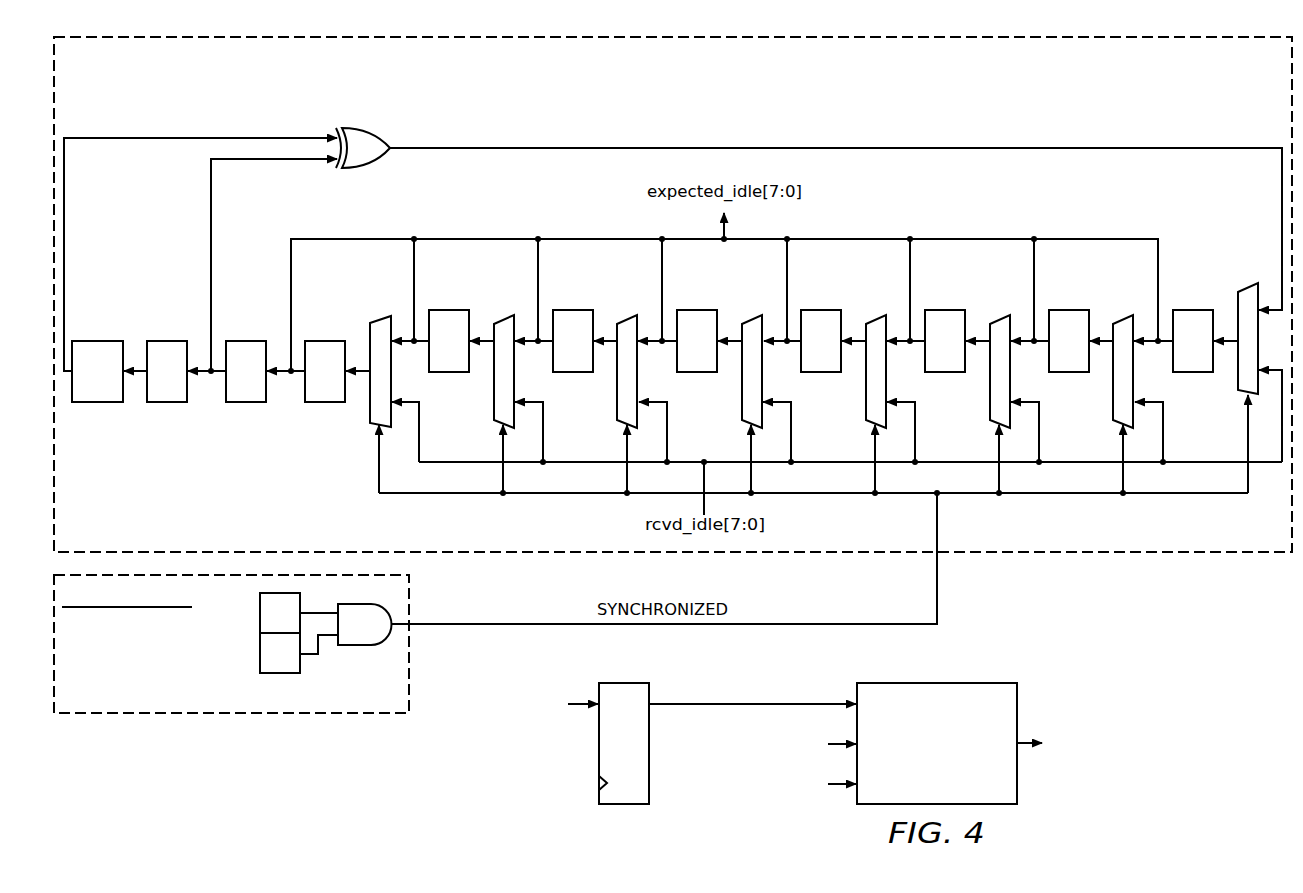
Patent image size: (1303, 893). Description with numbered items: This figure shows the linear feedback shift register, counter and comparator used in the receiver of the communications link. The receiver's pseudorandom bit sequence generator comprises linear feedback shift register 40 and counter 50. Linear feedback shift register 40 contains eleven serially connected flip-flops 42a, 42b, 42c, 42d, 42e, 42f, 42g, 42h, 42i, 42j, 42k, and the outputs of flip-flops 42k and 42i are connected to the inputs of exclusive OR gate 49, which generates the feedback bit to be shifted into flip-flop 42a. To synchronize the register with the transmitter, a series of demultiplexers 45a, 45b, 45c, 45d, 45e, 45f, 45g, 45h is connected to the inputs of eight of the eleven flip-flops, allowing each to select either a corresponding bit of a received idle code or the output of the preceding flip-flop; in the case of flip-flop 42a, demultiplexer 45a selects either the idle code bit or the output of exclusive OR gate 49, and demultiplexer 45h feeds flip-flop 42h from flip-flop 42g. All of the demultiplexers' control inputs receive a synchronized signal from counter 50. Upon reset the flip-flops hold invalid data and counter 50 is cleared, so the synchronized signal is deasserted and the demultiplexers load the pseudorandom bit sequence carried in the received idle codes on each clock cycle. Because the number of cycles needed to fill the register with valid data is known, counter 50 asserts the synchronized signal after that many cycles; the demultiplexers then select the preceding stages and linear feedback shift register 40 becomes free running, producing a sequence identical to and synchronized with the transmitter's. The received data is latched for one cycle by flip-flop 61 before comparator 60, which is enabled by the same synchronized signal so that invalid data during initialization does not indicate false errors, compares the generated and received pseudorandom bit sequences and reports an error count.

The linear feedback shift register 40 is at (227, 486).
The flip-flop 42a is at (1193, 309).
The flip-flop 42b is at (1069, 309).
The flip-flop 42c is at (945, 309).
The flip-flop 42d is at (821, 309).
The flip-flop 42e is at (697, 309).
The flip-flop 42f is at (573, 309).
The flip-flop 42g is at (449, 309).
The flip-flop 42h is at (326, 340).
The flip-flop 42i is at (247, 340).
The flip-flop 42j is at (167, 340).
The flip-flop 42k is at (97, 340).
The demultiplexer 45a is at (1247, 290).
The demultiplexer 45b is at (1113, 388).
The demultiplexer 45c is at (990, 388).
The demultiplexer 45d is at (866, 388).
The demultiplexer 45e is at (742, 388).
The demultiplexer 45f is at (617, 388).
The demultiplexer 45g is at (494, 388).
The demultiplexer 45h is at (380, 322).
The exclusive OR gate 49 is at (352, 125).
The counter 50 is at (365, 693).
The comparator 60 is at (948, 770).
The flip-flop 61 is at (634, 758).